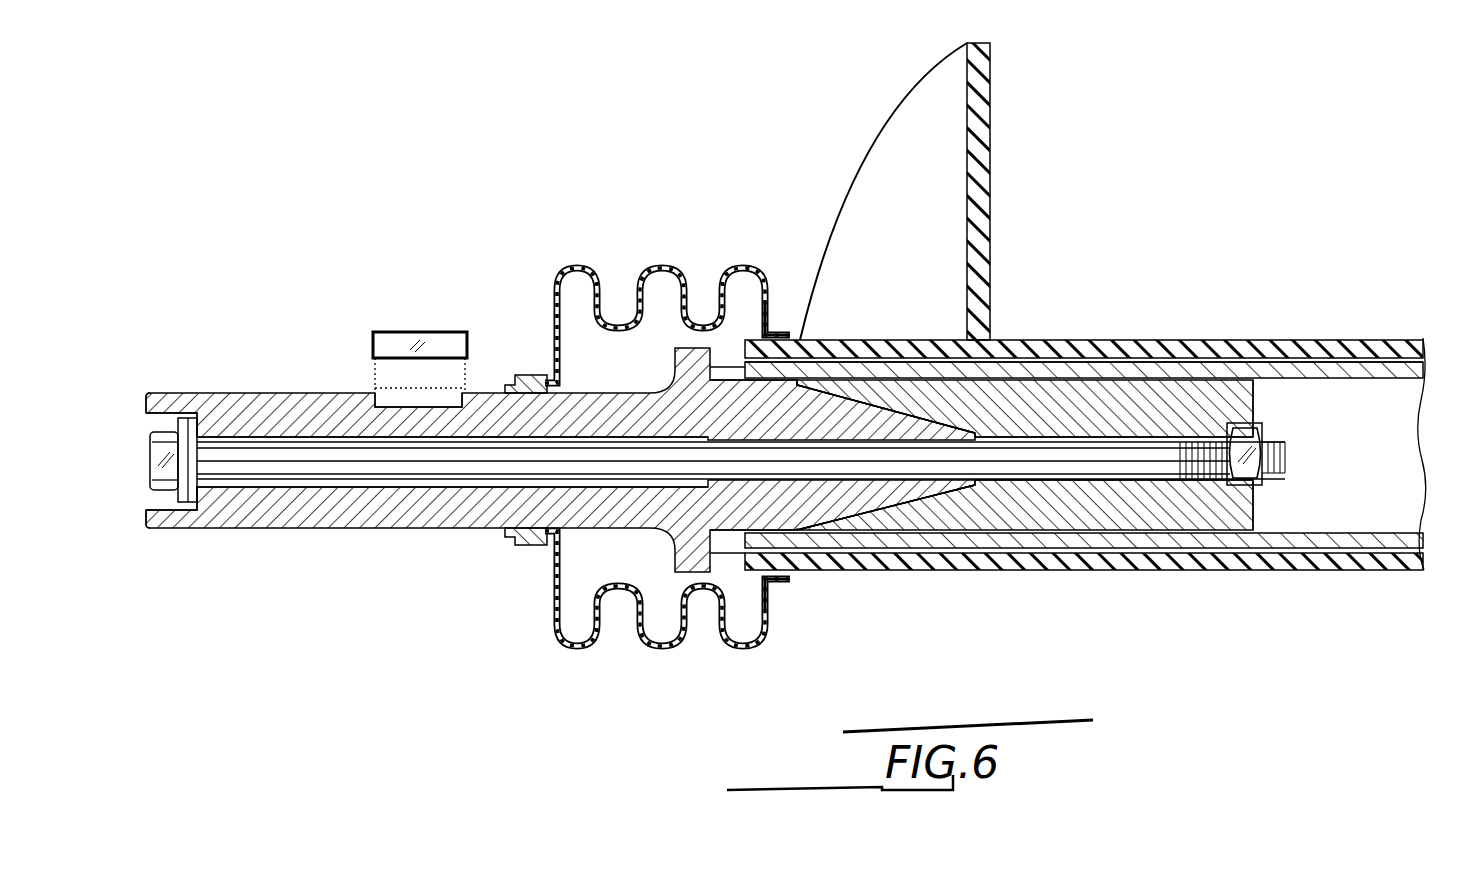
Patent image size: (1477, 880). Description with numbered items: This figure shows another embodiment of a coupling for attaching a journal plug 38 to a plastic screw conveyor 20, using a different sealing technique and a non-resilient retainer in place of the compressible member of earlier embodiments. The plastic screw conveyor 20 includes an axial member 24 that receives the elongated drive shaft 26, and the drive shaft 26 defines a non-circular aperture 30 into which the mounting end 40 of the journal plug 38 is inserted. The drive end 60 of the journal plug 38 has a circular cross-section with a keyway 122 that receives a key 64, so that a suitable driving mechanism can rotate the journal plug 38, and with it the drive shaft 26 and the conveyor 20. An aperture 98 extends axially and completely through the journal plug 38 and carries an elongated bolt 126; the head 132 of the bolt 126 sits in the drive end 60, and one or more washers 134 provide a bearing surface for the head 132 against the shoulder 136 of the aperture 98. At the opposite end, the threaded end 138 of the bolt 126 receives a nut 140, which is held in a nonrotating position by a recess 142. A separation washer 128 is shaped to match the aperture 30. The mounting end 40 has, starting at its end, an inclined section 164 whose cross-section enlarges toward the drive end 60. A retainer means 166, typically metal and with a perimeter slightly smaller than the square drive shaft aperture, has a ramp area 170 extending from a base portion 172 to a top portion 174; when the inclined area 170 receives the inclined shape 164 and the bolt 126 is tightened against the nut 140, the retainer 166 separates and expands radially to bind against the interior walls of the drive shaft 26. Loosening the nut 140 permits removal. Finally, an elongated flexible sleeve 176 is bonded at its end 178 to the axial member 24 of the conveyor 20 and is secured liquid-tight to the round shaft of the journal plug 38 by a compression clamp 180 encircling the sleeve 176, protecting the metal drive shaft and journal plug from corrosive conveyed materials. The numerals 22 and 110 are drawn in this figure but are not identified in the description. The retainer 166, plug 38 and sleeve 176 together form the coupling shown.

The plastic screw conveyor 20 is at (1126, 280).
The mounting plate 22 is at (913, 83).
The axial member 24 is at (1200, 343).
The drive shaft 26 is at (1275, 362).
The non-circular aperture 30 is at (1400, 392).
The journal plug 38 is at (495, 543).
The mounting end 40 is at (882, 545).
The drive end 60 is at (333, 523).
The key 64 is at (432, 338).
The aperture 98 is at (278, 483).
The housing end wall 110 is at (150, 421).
The keyway 122 is at (455, 393).
The elongated bolt 126 is at (1132, 467).
The separation washer 128 is at (990, 550).
The head 132 is at (158, 465).
The washers 134 is at (182, 497).
The shoulder 136 is at (199, 422).
The threaded end 138 is at (1288, 475).
The nut 140 is at (1262, 423).
The recess 142 is at (1262, 478).
The inclined section 164 is at (950, 487).
The retainer means 166 is at (1188, 523).
The ramp area 170 is at (925, 410).
The base portion 172 is at (1025, 415).
The top portion 174 is at (837, 387).
The flexible sleeve 176 is at (652, 270).
The sleeve end 178 is at (795, 333).
The compression clamp 180 is at (527, 546).